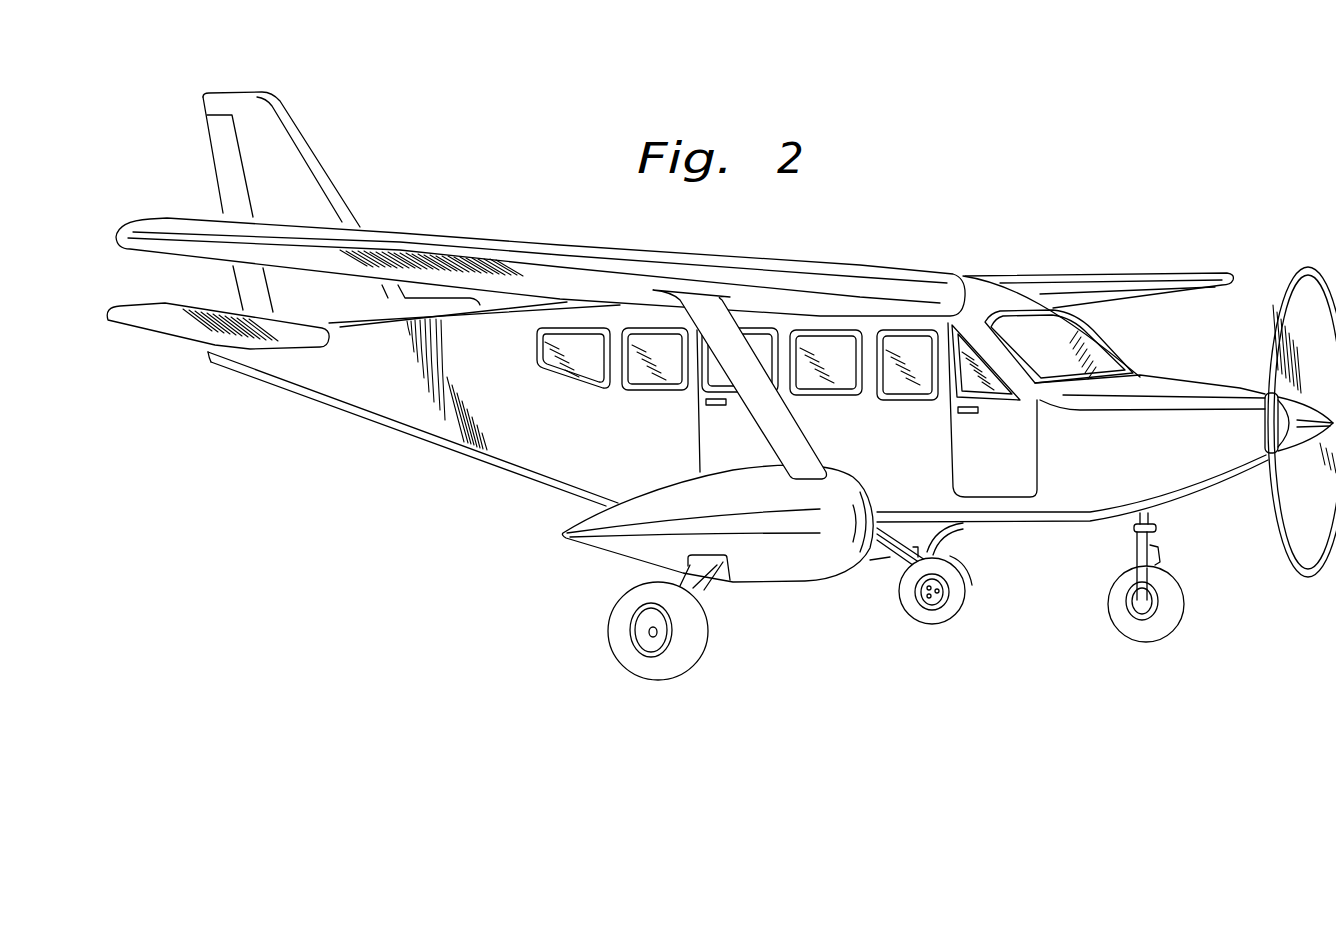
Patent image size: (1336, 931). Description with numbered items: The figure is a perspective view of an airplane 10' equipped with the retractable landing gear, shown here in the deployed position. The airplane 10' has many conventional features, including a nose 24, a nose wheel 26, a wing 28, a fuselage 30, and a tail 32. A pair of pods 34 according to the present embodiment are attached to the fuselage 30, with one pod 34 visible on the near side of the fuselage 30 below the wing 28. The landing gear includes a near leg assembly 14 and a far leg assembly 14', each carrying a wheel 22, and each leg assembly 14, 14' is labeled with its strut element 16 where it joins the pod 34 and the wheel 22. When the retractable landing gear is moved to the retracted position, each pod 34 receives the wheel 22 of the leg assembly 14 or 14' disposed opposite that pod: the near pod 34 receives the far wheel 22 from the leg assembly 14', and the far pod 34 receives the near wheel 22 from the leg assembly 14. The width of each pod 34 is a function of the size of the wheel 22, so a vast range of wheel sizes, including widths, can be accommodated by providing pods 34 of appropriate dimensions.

The airplane 10' is at (1091, 103).
The leg assembly 14 is at (738, 627).
The leg assembly 14' is at (972, 573).
The landing gear strut 16 is at (703, 587).
The wheel 22 is at (612, 637).
The nose 24 is at (1187, 480).
The nose wheel 26 is at (1187, 607).
The wing 28 is at (115, 238).
The fuselage 30 is at (540, 468).
The tail 32 is at (240, 98).
The pod 34 is at (803, 573).